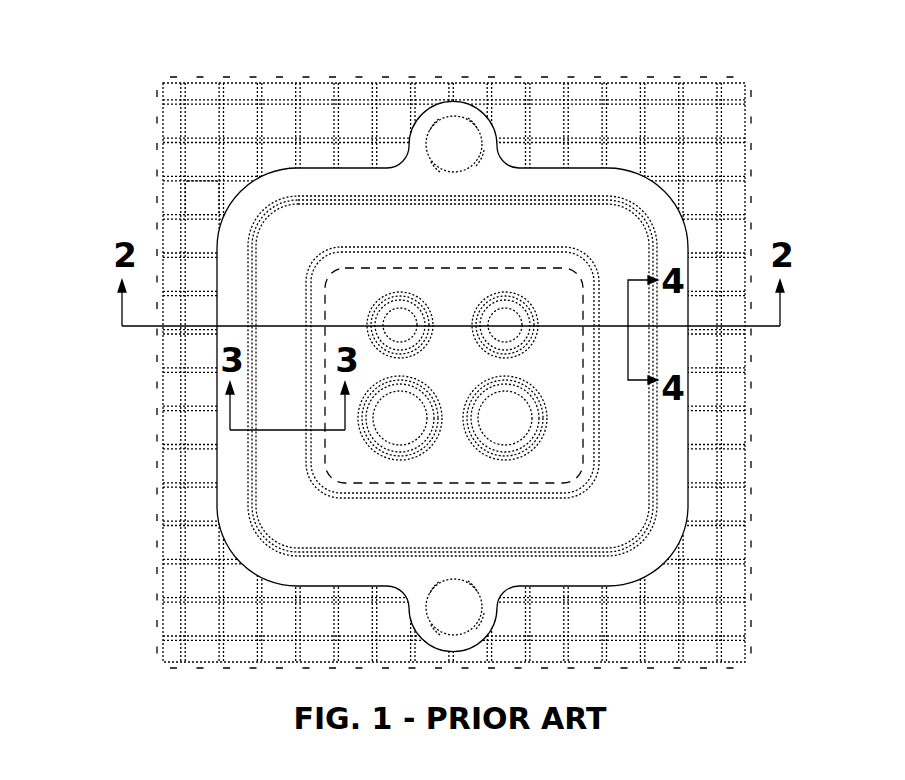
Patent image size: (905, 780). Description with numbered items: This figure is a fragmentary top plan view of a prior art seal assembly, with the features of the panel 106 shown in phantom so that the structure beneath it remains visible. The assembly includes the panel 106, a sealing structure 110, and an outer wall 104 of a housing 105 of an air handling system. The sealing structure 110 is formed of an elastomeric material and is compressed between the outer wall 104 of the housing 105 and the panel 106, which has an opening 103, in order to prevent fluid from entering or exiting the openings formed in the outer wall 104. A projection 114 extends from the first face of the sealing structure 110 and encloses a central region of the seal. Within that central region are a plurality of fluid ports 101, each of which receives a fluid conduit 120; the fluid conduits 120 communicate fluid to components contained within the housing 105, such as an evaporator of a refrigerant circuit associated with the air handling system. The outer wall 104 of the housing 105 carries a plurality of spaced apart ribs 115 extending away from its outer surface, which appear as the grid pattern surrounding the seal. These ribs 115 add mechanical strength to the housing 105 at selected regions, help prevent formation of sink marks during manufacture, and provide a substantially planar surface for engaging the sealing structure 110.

The fluid ports 101 is at (430, 311).
The opening 103 is at (487, 482).
The outer wall 104 is at (288, 95).
The housing 105 is at (288, 95).
The panel 106 is at (666, 665).
The sealing structure 110 is at (668, 239).
The projection 114 is at (250, 280).
The ribs 115 is at (182, 195).
The fluid conduits 120 is at (533, 308).